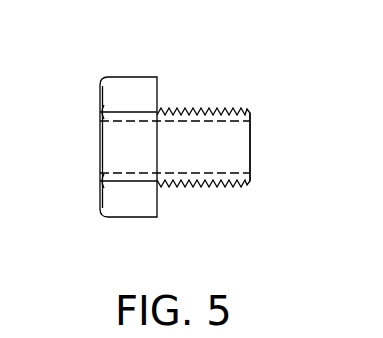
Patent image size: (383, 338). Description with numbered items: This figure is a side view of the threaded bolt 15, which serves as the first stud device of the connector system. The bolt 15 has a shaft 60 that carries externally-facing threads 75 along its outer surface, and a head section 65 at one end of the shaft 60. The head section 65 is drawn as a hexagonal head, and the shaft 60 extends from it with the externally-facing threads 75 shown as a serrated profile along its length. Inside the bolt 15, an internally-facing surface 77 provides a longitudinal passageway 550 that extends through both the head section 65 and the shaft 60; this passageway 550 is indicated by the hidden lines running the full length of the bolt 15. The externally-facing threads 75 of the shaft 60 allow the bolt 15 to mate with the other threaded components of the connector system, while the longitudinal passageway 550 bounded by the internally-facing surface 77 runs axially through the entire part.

The threaded bolt 15 is at (188, 127).
The head section 65 is at (132, 77).
The externally-facing threads 75 is at (236, 142).
The longitudinal passageway 550 is at (253, 147).
The shaft 60 is at (242, 107).
The internally-facing surface 77 is at (128, 173).